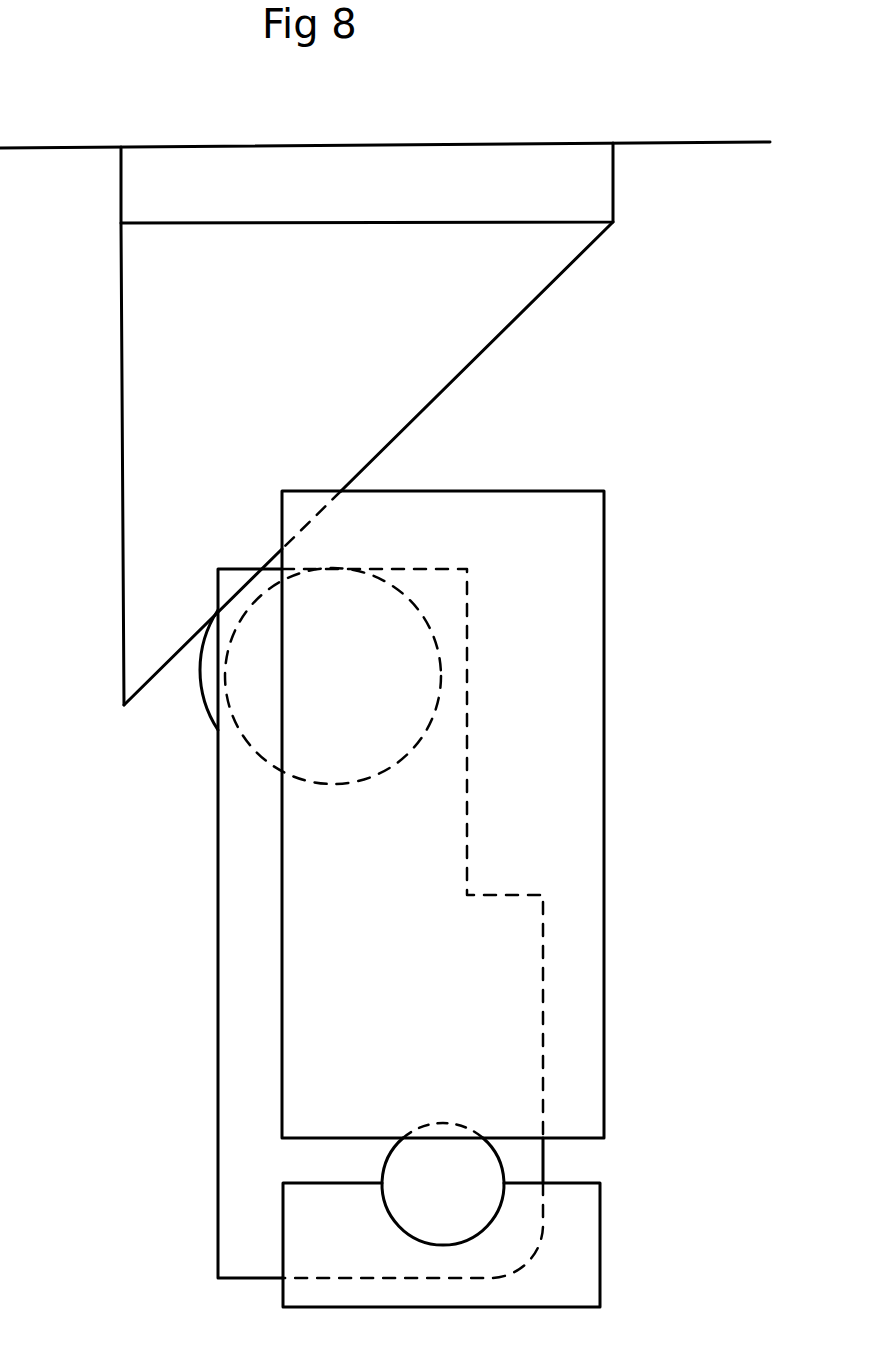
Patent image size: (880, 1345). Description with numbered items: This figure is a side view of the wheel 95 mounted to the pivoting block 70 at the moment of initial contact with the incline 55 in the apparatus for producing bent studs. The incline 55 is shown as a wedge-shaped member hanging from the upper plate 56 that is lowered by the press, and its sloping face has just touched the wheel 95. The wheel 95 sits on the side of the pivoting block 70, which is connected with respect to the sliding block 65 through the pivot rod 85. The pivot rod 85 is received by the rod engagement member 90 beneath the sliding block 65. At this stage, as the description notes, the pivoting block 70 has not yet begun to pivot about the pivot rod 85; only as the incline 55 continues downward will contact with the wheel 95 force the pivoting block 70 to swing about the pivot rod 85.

The mounting plate 56 is at (367, 183).
The incline 55 is at (367, 463).
The sliding block 65 is at (443, 814).
The pivoting block 70 is at (240, 887).
The wheel 95 is at (207, 682).
The pivot rod 85 is at (443, 1184).
The rod engagement member 90 is at (441, 1245).